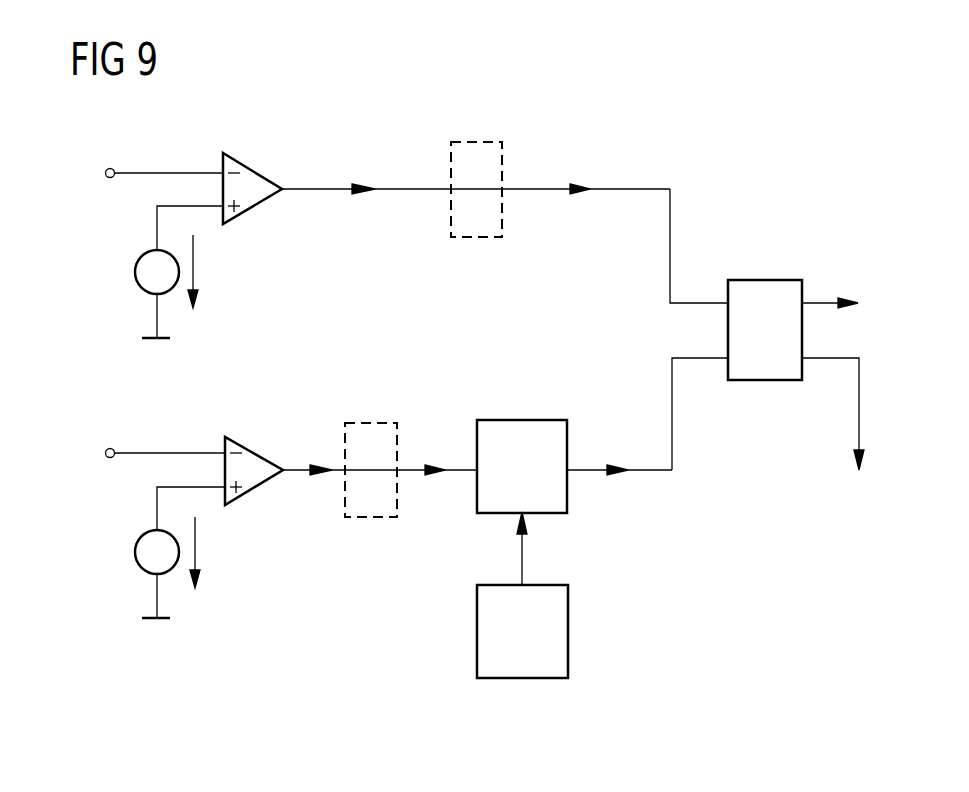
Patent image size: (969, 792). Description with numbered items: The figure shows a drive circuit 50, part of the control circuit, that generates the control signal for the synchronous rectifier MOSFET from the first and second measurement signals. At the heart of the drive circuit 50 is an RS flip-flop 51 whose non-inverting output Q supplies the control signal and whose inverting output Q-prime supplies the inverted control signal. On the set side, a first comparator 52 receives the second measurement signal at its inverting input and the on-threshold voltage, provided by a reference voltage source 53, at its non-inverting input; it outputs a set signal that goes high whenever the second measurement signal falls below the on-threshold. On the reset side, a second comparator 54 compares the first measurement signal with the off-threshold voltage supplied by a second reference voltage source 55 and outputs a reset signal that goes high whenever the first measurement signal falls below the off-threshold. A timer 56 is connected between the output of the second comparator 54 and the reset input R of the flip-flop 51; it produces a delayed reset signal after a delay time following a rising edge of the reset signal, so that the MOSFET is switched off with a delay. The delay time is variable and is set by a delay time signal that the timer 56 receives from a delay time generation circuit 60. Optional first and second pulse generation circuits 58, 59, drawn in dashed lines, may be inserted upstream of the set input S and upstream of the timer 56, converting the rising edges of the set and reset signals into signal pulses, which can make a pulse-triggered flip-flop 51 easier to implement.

The drive circuit 50 is at (782, 165).
The flip-flop 51 is at (763, 280).
The first comparator 52 is at (257, 170).
The reference voltage source 53 is at (134, 272).
The second comparator 54 is at (258, 450).
The second reference voltage source 55 is at (134, 553).
The timer 56 is at (522, 420).
The first pulse generation circuit 58 is at (472, 142).
The second pulse generation circuit 59 is at (368, 423).
The delay time generation circuit 60 is at (568, 633).